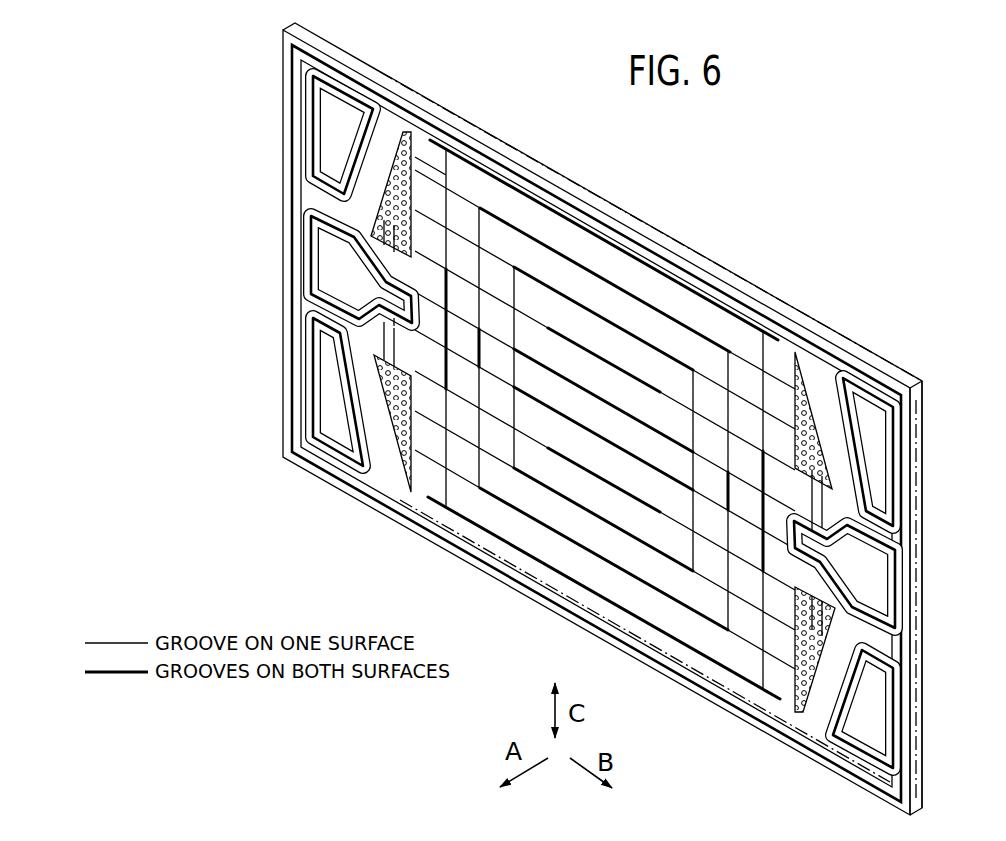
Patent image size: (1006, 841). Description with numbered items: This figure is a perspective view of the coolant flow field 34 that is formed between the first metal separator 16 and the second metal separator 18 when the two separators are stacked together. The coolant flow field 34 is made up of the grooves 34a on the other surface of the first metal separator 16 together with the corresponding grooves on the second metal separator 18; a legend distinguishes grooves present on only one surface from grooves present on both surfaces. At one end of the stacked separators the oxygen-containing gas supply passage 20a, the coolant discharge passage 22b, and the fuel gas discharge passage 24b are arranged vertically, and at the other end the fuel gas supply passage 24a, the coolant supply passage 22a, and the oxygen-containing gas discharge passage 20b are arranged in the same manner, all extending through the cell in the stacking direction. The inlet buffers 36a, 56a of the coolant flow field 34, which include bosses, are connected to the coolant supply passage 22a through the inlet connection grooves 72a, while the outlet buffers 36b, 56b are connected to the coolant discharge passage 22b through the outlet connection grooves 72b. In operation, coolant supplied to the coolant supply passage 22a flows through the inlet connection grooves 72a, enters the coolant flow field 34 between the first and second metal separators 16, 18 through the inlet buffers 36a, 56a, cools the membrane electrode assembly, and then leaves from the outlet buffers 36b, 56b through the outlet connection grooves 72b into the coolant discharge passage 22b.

The first metal separator 16 is at (927, 400).
The second metal separator 18 is at (927, 437).
The oxygen-containing gas supply passage 20a is at (327, 121).
The oxygen-containing gas discharge passage 20b is at (877, 695).
The coolant supply passage 22a is at (844, 574).
The coolant discharge passage 22b is at (361, 269).
The fuel gas supply passage 24a is at (880, 473).
The fuel gas discharge passage 24b is at (325, 400).
The coolant flow field 34 is at (766, 240).
The grooves 34a is at (666, 308).
The inlet buffer 36a is at (804, 420).
The outlet buffer 36b is at (405, 464).
The inlet buffer 56a is at (797, 675).
The outlet buffer 56b is at (405, 200).
The inlet connection grooves 72a is at (840, 515).
The outlet connection grooves 72b is at (368, 327).